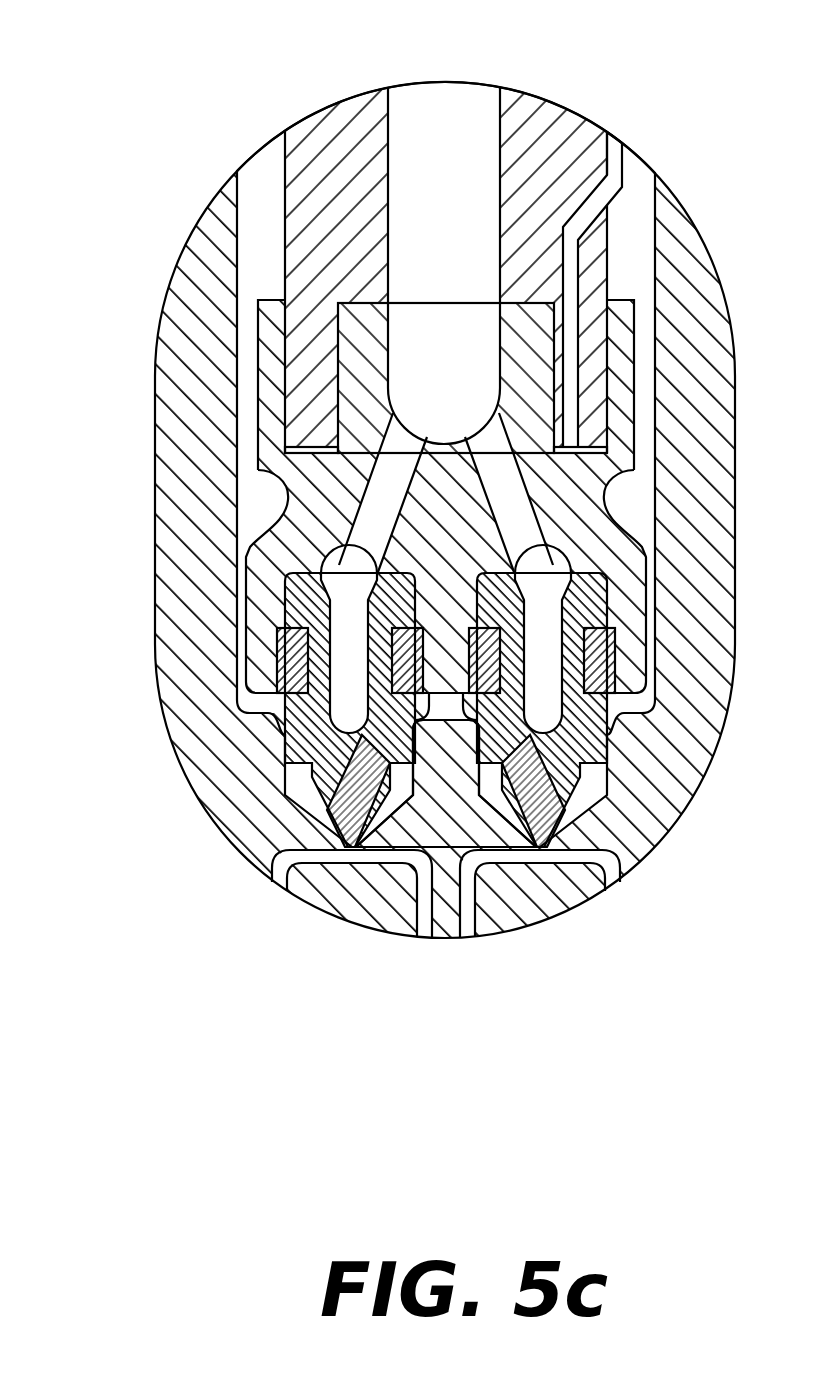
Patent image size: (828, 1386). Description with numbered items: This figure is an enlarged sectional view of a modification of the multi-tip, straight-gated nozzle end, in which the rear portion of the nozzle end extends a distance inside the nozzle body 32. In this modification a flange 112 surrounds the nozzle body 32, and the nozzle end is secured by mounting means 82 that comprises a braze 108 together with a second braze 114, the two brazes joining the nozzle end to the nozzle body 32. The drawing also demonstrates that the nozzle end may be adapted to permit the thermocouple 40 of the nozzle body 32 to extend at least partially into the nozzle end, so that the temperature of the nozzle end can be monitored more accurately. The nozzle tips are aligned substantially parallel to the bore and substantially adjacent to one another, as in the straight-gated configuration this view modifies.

The nozzle body 32 is at (303, 263).
The thermocouple 40 is at (613, 150).
The mounting means 82 is at (340, 350).
The braze 108 is at (446, 300).
The flange 112 is at (258, 382).
The braze 114 is at (263, 318).